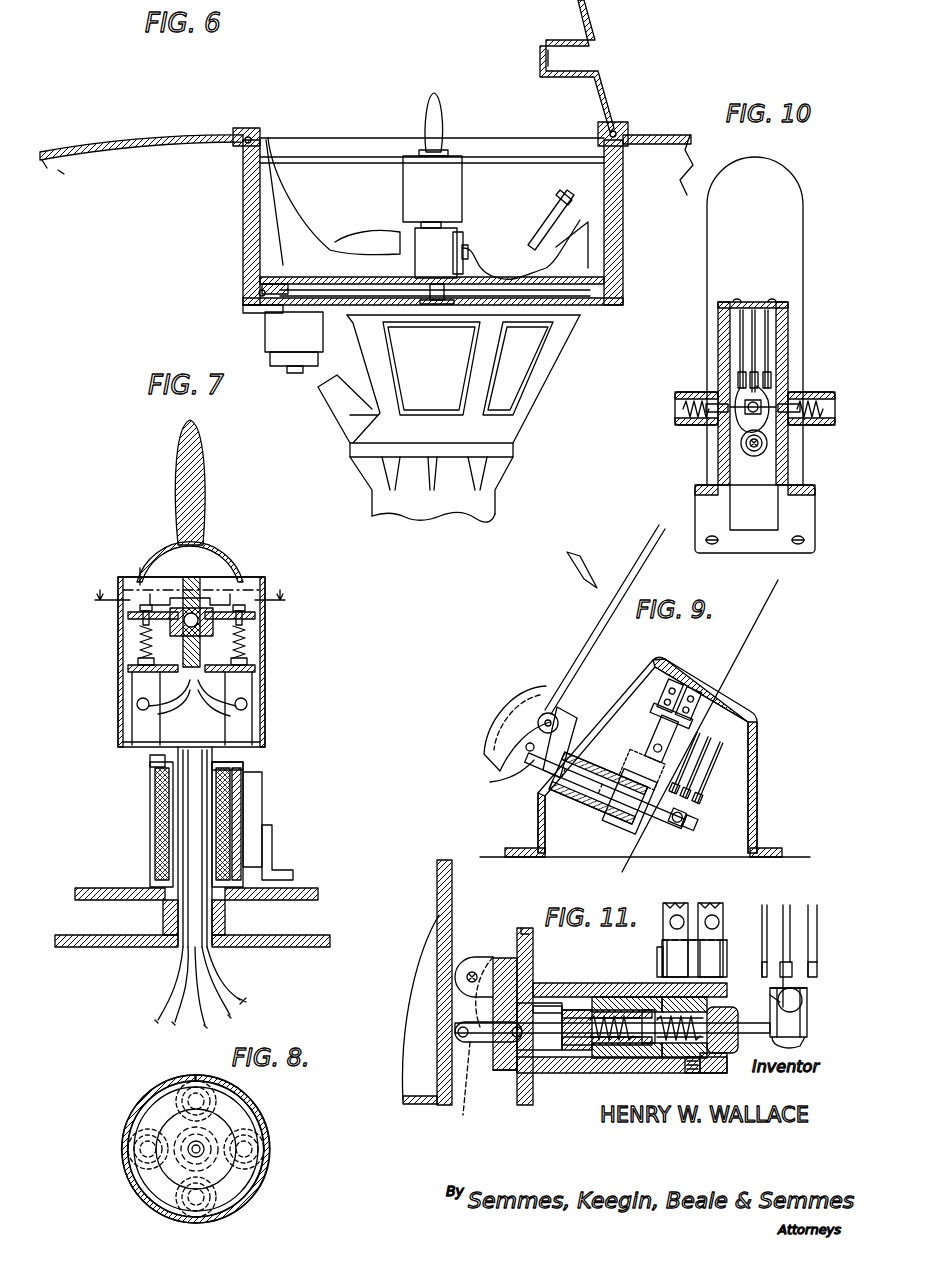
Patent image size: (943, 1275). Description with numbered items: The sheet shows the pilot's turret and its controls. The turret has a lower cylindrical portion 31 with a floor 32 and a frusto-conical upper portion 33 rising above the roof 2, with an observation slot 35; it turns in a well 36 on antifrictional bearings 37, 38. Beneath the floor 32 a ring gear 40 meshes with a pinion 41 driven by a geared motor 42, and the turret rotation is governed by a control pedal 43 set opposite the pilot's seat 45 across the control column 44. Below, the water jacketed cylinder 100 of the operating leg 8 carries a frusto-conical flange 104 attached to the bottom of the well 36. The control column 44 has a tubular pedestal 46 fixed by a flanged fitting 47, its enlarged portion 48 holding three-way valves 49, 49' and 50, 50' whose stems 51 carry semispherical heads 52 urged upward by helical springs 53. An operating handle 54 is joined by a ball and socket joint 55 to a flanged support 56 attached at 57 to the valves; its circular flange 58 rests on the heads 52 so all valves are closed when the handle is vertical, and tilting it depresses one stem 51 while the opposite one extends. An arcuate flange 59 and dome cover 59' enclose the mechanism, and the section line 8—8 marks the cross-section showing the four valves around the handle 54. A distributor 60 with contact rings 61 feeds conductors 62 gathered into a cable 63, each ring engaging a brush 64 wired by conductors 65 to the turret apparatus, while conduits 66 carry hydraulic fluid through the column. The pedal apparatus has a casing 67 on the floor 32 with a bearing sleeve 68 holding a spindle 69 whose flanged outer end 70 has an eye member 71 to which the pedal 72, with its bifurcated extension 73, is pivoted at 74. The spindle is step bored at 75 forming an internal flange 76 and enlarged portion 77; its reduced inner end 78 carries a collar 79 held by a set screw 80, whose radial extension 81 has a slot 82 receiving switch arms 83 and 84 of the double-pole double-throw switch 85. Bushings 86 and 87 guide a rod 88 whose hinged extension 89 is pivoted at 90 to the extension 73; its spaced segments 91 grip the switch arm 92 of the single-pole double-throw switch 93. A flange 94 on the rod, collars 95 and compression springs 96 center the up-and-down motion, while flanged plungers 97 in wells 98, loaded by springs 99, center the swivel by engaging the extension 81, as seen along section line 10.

In FIG. 6, the roof 2 is at (112, 146).
In FIG. 6, the operating leg 8 is at (352, 504).
In FIG. 7, the operating leg 8 is at (190, 586).
In FIG. 9, the section line 10— 10 is at (786, 588).
In FIG. 11, the section line 10— 10 is at (630, 882).
In FIG. 6, the lower cylindrical portion 31 is at (612, 215).
In FIG. 6, the floor 32 is at (524, 286).
In FIG. 7, the floor 32 is at (75, 893).
In FIG. 6, the frusto-conical upper portion 33 is at (602, 97).
In FIG. 6, the observation slot 35 is at (578, 62).
In FIG. 6, the well 36 is at (243, 232).
In FIG. 7, the well 36 is at (72, 947).
In FIG. 6, the antifrictional bearing 37 is at (255, 292).
In FIG. 6, the antifrictional bearing 38 is at (238, 150).
In FIG. 6, the ring gear 40 is at (278, 290).
In FIG. 6, the pinion 41 is at (255, 303).
In FIG. 6, the geared motor 42 is at (283, 341).
In FIG. 6, the control pedal 43 is at (582, 212).
In FIG. 10, the control pedal 43 is at (816, 306).
In FIG. 9, the control pedal 43 is at (770, 750).
In FIG. 6, the control column 44 is at (470, 218).
In FIG. 7, the control column 44 is at (274, 676).
In FIG. 6, the pilot's seat 45 is at (330, 236).
In FIG. 6, the tubular pedestal 46 is at (432, 300).
In FIG. 7, the tubular pedestal 46 is at (150, 762).
In FIG. 6, the flanged fitting 47 is at (436, 302).
In FIG. 7, the flanged fitting 47 is at (163, 915).
In FIG. 6, the enlarged upper portion 48 is at (462, 180).
In FIG. 7, the enlarged upper portion 48 is at (265, 688).
In FIG. 8, the enlarged upper portion 48 is at (152, 1090).
In FIG. 7, the operating valve 49 is at (137, 704).
In FIG. 8, the operating valve 49 is at (125, 1149).
In FIG. 7, the operating valve 49' is at (251, 708).
In FIG. 8, the operating valve 49' is at (266, 1149).
In FIG. 7, the operating valve 50 is at (134, 708).
In FIG. 8, the operating valve 50 is at (196, 1078).
In FIG. 8, the operating valve 50' is at (209, 1206).
In FIG. 7, the stem 51 is at (140, 636).
In FIG. 7, the semispherical head 52 is at (140, 620).
In FIG. 7, the helical spring 53 is at (138, 655).
In FIG. 6, the operating handle 54 is at (441, 118).
In FIG. 7, the operating handle 54 is at (205, 492).
In FIG. 8, the operating handle 54 is at (203, 1143).
In FIG. 7, the ball and socket joint 55 is at (200, 600).
In FIG. 7, the flanged support 56 is at (180, 645).
In FIG. 8, the flanged support 56 is at (252, 1196).
In FIG. 7, the attachment 57 is at (128, 668).
In FIG. 7, the circular flange 58 is at (128, 615).
In FIG. 8, the circular flange 58 is at (235, 1108).
In FIG. 7, the arcuate flange 59 is at (193, 550).
In FIG. 7, the dome cover 59' is at (135, 558).
In FIG. 6, the distributor 60 is at (415, 230).
In FIG. 7, the distributor 60 is at (150, 780).
In FIG. 7, the contact ring 61 is at (155, 835).
In FIG. 6, the conductor 62 is at (478, 256).
In FIG. 7, the conductor 62 is at (244, 990).
In FIG. 7, the cable 63 is at (222, 968).
In FIG. 7, the brush 64 is at (243, 766).
In FIG. 7, the conductor 65 is at (280, 832).
In FIG. 7, the conduit 66 is at (184, 970).
In FIG. 10, the casing 67 is at (718, 314).
In FIG. 9, the casing 67 is at (756, 720).
In FIG. 11, the casing 67 is at (526, 928).
In FIG. 9, the bearing sleeve 68 is at (580, 812).
In FIG. 11, the bearing sleeve 68 is at (625, 983).
In FIG. 10, the spindle 69 is at (748, 450).
In FIG. 9, the spindle 69 is at (596, 782).
In FIG. 11, the spindle 69 is at (565, 1023).
In FIG. 9, the flanged outer end 70 is at (530, 770).
In FIG. 11, the flanged outer end 70 is at (510, 958).
In FIG. 9, the eye member 71 is at (566, 716).
In FIG. 11, the eye member 71 is at (500, 958).
In FIG. 10, the pedal 72 is at (805, 228).
In FIG. 9, the pedal 72 is at (575, 628).
In FIG. 11, the pedal 72 is at (437, 902).
In FIG. 9, the bifurcated extension 73 is at (552, 712).
In FIG. 11, the bifurcated extension 73 is at (467, 957).
In FIG. 9, the pivot 74 is at (534, 744).
In FIG. 11, the pivot 74 is at (474, 972).
In FIG. 11, the bore 75 is at (606, 997).
In FIG. 11, the internal flange 76 is at (655, 997).
In FIG. 11, the enlarged portion 77 is at (540, 1003).
In FIG. 11, the reduced portion 78 is at (722, 1060).
In FIG. 9, the collar 79 is at (628, 818).
In FIG. 11, the collar 79 is at (704, 1070).
In FIG. 11, the set screw 80 is at (694, 1073).
In FIG. 10, the radial extension 81 is at (762, 398).
In FIG. 11, the radial extension 81 is at (727, 938).
In FIG. 10, the slot 82 is at (740, 432).
In FIG. 11, the slot 82 is at (660, 947).
In FIG. 11, the switch arm 83 is at (723, 964).
In FIG. 9, the switch arm 84 is at (628, 724).
In FIG. 11, the switch arm 84 is at (680, 962).
In FIG. 11, the double-pole double-throw switch 85 is at (698, 896).
In FIG. 11, the bushing 86 is at (580, 1058).
In FIG. 10, the bushing 87 is at (738, 460).
In FIG. 11, the bushing 87 is at (772, 1037).
In FIG. 10, the rod 88 is at (752, 458).
In FIG. 11, the rod 88 is at (554, 1073).
In FIG. 9, the hinged extension 89 is at (507, 774).
In FIG. 11, the hinged extension 89 is at (490, 1042).
In FIG. 11, the pivot 90 is at (463, 1086).
In FIG. 11, the spaced segments 91 is at (802, 1046).
In FIG. 10, the switch arm 92 is at (760, 360).
In FIG. 11, the switch arm 92 is at (807, 988).
In FIG. 10, the single-pole double-throw switch 93 is at (778, 334).
In FIG. 11, the single-pole double-throw switch 93 is at (791, 900).
In FIG. 11, the flange 94 is at (648, 1045).
In FIG. 11, the collar 95 is at (615, 1045).
In FIG. 11, the compression spring 96 is at (728, 1010).
In FIG. 10, the flanged plunger 97 is at (710, 392).
In FIG. 10, the well 98 is at (704, 420).
In FIG. 10, the spring 99 is at (684, 393).
In FIG. 6, the water jacketed cylinder 100 is at (495, 501).
In FIG. 6, the frusto-conical flange 104 is at (545, 383).